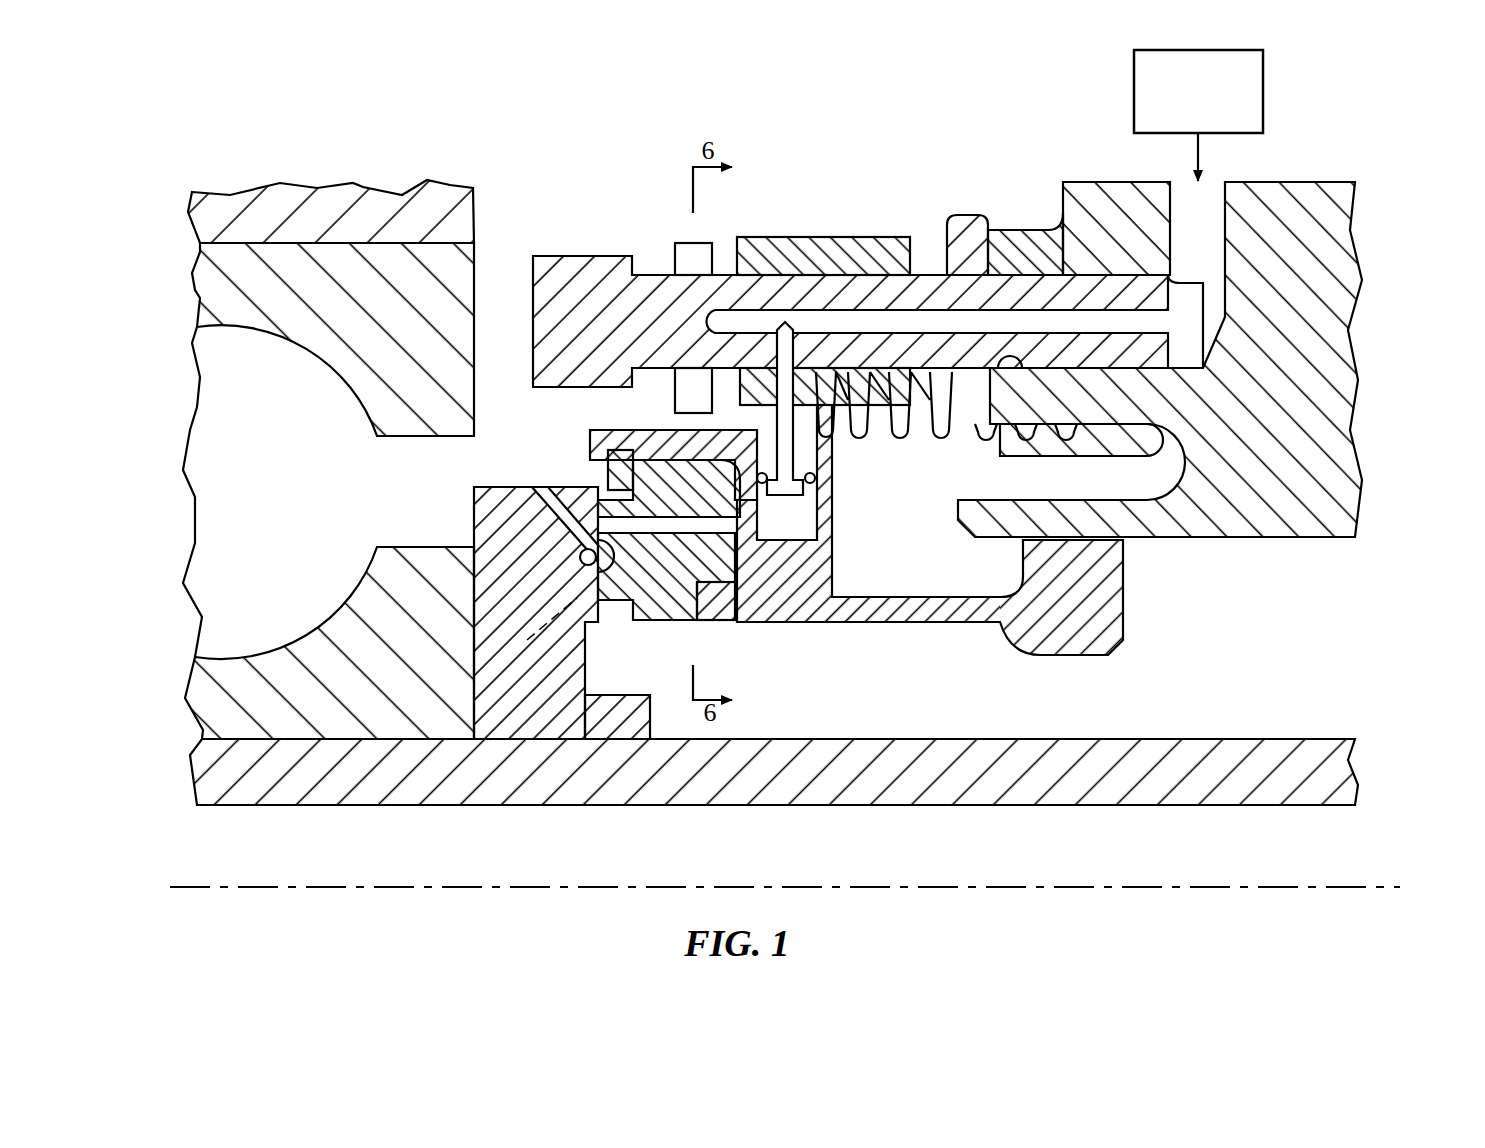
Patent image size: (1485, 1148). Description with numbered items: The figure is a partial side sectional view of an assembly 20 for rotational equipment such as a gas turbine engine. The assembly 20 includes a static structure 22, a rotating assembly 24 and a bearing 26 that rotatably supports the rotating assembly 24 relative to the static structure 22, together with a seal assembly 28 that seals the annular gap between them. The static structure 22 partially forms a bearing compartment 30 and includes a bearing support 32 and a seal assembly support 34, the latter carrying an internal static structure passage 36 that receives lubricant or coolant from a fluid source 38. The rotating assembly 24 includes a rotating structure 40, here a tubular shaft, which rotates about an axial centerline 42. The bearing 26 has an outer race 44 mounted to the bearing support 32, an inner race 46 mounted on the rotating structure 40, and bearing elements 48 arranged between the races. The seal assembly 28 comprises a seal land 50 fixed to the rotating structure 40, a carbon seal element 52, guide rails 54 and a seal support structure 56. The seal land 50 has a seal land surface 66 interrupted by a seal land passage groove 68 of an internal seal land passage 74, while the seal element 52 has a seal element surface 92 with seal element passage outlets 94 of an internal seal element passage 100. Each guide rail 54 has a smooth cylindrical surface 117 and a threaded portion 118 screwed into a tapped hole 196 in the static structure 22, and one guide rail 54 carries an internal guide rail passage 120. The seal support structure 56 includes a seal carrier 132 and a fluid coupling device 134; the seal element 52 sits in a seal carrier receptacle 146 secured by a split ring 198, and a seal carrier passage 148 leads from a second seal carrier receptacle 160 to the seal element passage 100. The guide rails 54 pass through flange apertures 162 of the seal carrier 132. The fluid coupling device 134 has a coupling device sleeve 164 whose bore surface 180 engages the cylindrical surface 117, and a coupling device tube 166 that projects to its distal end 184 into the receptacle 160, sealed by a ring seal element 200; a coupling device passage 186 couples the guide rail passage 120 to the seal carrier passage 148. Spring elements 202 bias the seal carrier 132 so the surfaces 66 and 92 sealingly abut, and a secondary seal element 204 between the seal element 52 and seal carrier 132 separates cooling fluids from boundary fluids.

The assembly 20 is at (212, 140).
The static structure 22 is at (385, 188).
The rotating assembly 24 is at (1365, 730).
The bearing 26 is at (178, 277).
The seal assembly 28 is at (835, 175).
The bearing compartment 30 is at (529, 106).
The bearing support 32 is at (318, 185).
The seal assembly support 34 is at (1358, 200).
The static structure passage 36 is at (1185, 210).
The fluid source 38 is at (1134, 98).
The rotating structure 40 is at (1290, 737).
The axial centerline 42 is at (1375, 882).
The outer race 44 is at (198, 298).
The inner race 46 is at (192, 708).
The bearing elements 48 is at (193, 540).
The seal land 50 is at (525, 742).
The seal element 52 is at (653, 626).
The guide rails 54 is at (530, 300).
The seal support structure 56 is at (893, 648).
The seal land surface 66 is at (598, 560).
The seal land passage groove 68 is at (585, 555).
The seal land passage 74 is at (545, 520).
The seal element surface 92 is at (580, 597).
The seal element passage outlets 94 is at (596, 480).
The seal element passage 100 is at (630, 540).
The cylindrical surface 117 is at (800, 265).
The threaded portion 118 is at (1018, 275).
The guide rail passage 120 is at (937, 320).
The seal carrier 132 is at (810, 630).
The fluid coupling device 134 is at (870, 237).
The seal carrier receptacle 146 is at (588, 478).
The seal carrier passage 148 is at (760, 545).
The seal carrier receptacle 160 is at (830, 540).
The flange aperture 162 is at (690, 245).
The coupling device sleeve 164 is at (770, 240).
The coupling device tube 166 is at (810, 455).
The bore surface 180 is at (848, 237).
The distal end 184 is at (798, 520).
The coupling device passage 186 is at (780, 410).
The tapped hole 196 is at (1205, 350).
The split ring 198 is at (600, 430).
The ring seal element 200 is at (815, 478).
The spring elements 202 is at (1040, 468).
The secondary seal element 204 is at (720, 625).